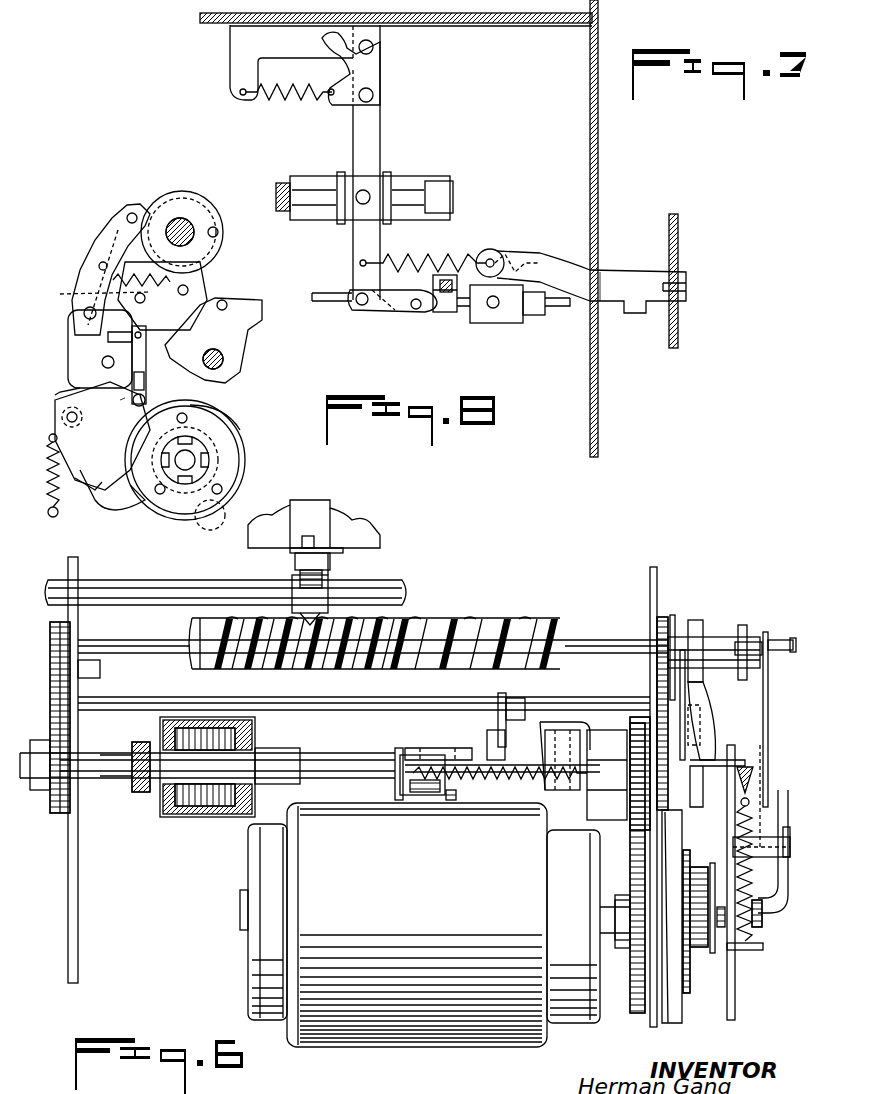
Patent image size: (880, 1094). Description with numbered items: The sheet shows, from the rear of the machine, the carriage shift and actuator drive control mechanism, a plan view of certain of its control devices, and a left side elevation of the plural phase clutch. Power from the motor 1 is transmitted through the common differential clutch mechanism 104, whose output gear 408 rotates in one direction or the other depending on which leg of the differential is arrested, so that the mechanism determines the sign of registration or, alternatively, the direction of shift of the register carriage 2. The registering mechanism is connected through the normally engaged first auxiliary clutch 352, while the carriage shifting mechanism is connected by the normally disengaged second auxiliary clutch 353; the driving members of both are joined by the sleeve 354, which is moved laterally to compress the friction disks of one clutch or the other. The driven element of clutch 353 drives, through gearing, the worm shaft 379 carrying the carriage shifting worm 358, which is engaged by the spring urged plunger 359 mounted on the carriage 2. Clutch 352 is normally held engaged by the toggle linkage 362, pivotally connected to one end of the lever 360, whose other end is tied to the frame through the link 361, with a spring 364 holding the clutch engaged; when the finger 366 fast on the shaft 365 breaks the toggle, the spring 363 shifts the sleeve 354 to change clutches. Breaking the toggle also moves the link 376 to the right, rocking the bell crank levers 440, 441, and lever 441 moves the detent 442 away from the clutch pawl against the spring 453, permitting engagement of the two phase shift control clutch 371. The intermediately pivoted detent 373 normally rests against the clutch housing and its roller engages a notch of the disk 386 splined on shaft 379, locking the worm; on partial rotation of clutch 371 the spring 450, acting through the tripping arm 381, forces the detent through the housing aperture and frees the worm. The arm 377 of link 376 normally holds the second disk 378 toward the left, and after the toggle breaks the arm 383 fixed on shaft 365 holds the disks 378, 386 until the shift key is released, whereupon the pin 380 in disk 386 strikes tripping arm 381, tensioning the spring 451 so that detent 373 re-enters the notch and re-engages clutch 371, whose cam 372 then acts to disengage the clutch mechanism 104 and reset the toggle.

In FIG. 6, the motor 1 is at (343, 1030).
In FIG. 6, the register carriage 2 is at (370, 518).
In FIG. 6, the differential clutch mechanism 104 is at (690, 1005).
In FIG. 6, the first auxiliary clutch 352 is at (170, 818).
In FIG. 6, the second auxiliary clutch 353 is at (612, 730).
In FIG. 7, the sleeve 354 is at (320, 178).
In FIG. 6, the sleeve 354 is at (365, 752).
In FIG. 6, the carriage shifting worm 358 is at (522, 630).
In FIG. 6, the spring urged plunger 359 is at (325, 600).
In FIG. 7, the lever 360 is at (353, 240).
In FIG. 6, the lever 360 is at (420, 755).
In FIG. 7, the link 361 is at (380, 70).
In FIG. 7, the toggle linkage 362 is at (395, 320).
In FIG. 6, the toggle linkage 362 is at (477, 797).
In FIG. 7, the spring 363 is at (395, 256).
In FIG. 6, the spring 363 is at (513, 803).
In FIG. 7, the spring 364 is at (270, 100).
In FIG. 8, the shaft 365 is at (80, 296).
In FIG. 6, the shaft 365 is at (298, 698).
In FIG. 7, the finger 366 is at (452, 313).
In FIG. 6, the finger 366 is at (498, 710).
In FIG. 8, the two phase shift control clutch 371 is at (258, 451).
In FIG. 8, the cam 372 is at (240, 412).
In FIG. 8, the detent 373 is at (60, 396).
In FIG. 6, the detent 373 is at (768, 705).
In FIG. 7, the link 376 is at (608, 270).
In FIG. 8, the link 376 is at (160, 343).
In FIG. 6, the link 376 is at (725, 760).
In FIG. 8, the arm 377 is at (112, 215).
In FIG. 6, the arm 377 is at (712, 694).
In FIG. 8, the second disk 378 is at (170, 210).
In FIG. 6, the second disk 378 is at (696, 618).
In FIG. 6, the worm shaft 379 is at (590, 638).
In FIG. 8, the pin 380 is at (220, 231).
In FIG. 8, the tripping arm 381 is at (205, 272).
In FIG. 8, the arm 383 is at (188, 288).
In FIG. 6, the arm 383 is at (715, 722).
In FIG. 8, the disk 386 is at (205, 195).
In FIG. 6, the disk 386 is at (743, 624).
In FIG. 6, the output gear 408 is at (638, 1013).
In FIG. 7, the bell crank lever 440 is at (688, 288).
In FIG. 8, the bell crank lever 440 is at (147, 368).
In FIG. 6, the bell crank lever 440 is at (742, 790).
In FIG. 8, the bell crank lever 441 is at (92, 500).
In FIG. 6, the bell crank lever 441 is at (782, 893).
In FIG. 8, the detent 442 is at (112, 508).
In FIG. 8, the spring 450 is at (56, 398).
In FIG. 8, the spring 451 is at (112, 281).
In FIG. 8, the spring 453 is at (45, 458).